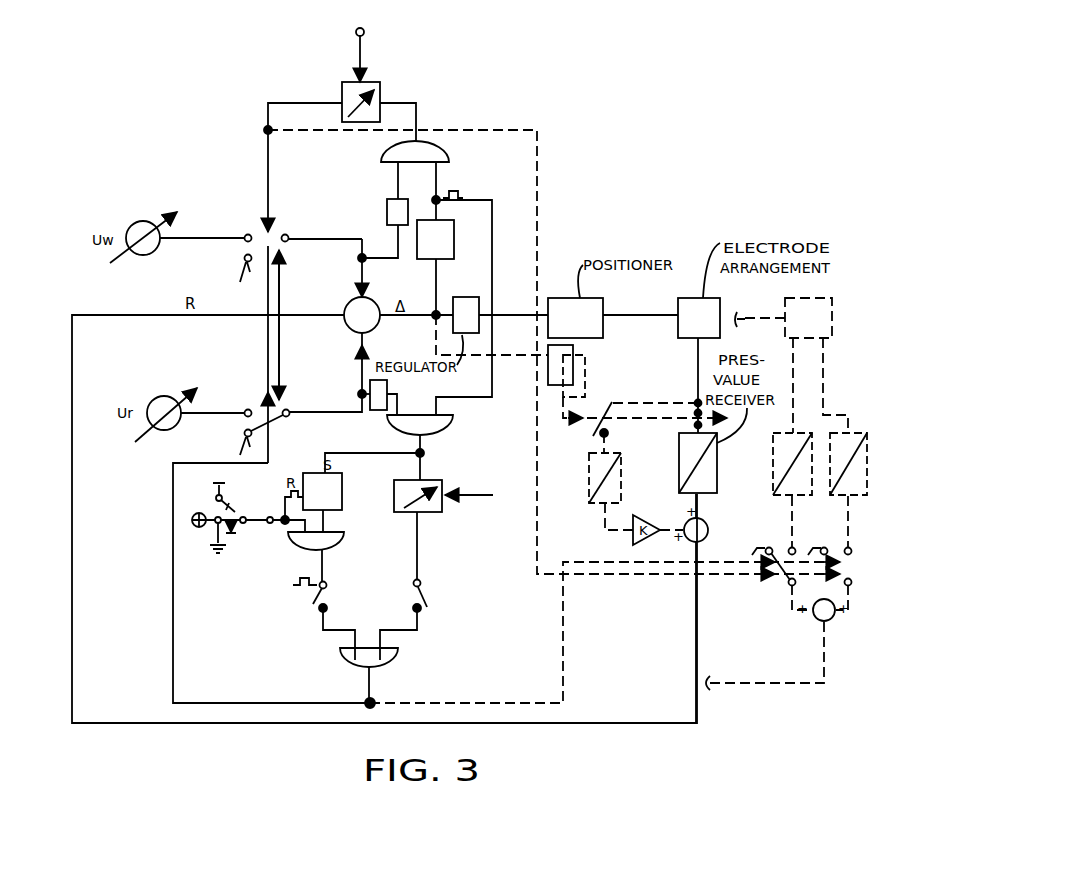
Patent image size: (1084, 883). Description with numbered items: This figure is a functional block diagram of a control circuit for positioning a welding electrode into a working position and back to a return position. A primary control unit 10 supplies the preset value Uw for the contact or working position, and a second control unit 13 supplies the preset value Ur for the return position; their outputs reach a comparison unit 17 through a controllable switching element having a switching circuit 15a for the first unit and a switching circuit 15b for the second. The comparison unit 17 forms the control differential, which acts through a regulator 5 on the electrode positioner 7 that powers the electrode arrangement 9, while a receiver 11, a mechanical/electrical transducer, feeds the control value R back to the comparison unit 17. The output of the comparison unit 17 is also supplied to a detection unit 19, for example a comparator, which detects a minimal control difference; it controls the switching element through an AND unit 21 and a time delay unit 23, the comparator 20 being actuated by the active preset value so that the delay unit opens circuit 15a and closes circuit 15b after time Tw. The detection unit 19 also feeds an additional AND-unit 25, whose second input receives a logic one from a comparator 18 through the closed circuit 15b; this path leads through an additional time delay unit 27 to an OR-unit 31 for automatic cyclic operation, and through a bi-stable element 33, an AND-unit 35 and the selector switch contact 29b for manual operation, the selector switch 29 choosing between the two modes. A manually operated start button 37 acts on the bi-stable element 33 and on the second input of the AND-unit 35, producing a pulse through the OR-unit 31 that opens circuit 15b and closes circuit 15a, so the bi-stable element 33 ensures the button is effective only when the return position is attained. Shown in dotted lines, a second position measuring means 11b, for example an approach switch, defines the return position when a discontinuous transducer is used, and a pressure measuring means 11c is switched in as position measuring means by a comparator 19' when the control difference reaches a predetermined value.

The regulator 5 is at (453, 297).
The electrode positioner 7 is at (560, 298).
The electrode arrangement 9 is at (685, 338).
The primary control unit 10 is at (140, 222).
The position measuring means (receiver) 11 is at (679, 468).
The second position measuring means 11b is at (773, 448).
The pressure measuring means 11c is at (589, 470).
The second control unit 13 is at (175, 430).
The switching circuit 15a is at (258, 230).
The switching circuit 15b is at (258, 400).
The comparison unit 17 is at (345, 325).
The comparator 18 is at (387, 392).
The detection unit 19 is at (451, 239).
The comparator 19' is at (561, 386).
The comparator 20 is at (387, 210).
The AND unit 21 is at (449, 153).
The time delay unit 23 is at (380, 92).
The additional AND-unit 25 is at (453, 427).
The additional time delay unit 27 is at (432, 512).
The selector switch 29 is at (428, 597).
The selector switch contact 29b is at (310, 600).
The OR-unit 31 is at (395, 663).
The bi-stable element 33 is at (342, 490).
The AND-unit 35 is at (300, 548).
The manually operated start button 37 is at (213, 507).